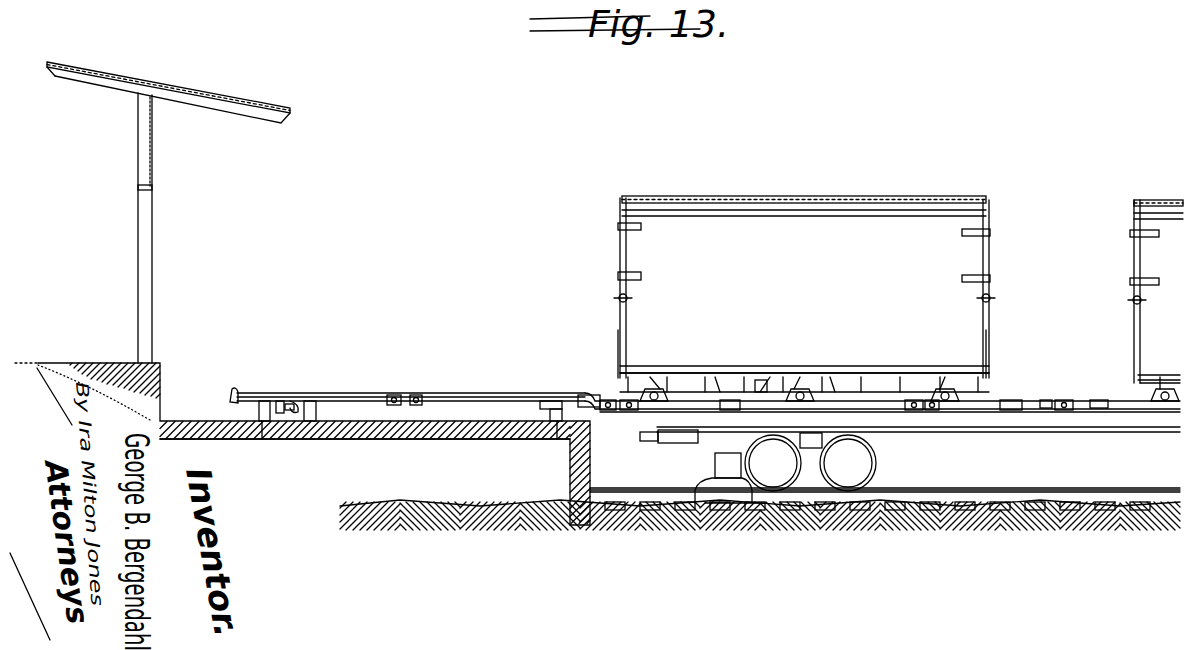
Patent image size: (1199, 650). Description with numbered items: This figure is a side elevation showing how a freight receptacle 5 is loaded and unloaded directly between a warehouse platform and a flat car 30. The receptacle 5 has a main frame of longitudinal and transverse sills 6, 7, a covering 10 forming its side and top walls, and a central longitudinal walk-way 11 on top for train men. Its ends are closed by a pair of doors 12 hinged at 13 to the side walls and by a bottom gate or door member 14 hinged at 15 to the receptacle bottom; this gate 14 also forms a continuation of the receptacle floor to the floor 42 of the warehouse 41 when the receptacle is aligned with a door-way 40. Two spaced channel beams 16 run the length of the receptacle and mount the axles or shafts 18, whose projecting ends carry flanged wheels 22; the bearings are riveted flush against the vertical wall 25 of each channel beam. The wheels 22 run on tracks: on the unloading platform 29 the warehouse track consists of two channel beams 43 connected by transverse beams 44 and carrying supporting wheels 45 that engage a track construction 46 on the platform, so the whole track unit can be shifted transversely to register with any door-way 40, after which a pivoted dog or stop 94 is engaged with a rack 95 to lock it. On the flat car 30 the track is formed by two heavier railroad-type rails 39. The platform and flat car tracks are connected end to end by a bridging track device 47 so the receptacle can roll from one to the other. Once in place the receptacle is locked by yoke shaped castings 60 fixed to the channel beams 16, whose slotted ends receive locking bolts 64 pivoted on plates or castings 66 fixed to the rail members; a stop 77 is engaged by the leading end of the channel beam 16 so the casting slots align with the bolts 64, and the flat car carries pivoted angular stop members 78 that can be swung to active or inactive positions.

The receptacle 5 is at (918, 195).
The longitudinal sill 6 is at (1160, 383).
The transverse sill 7 is at (780, 380).
The covering 10 is at (865, 312).
The central longitudinal walk-way 11 is at (772, 196).
The doors 12 is at (618, 244).
The door hinge 13 is at (641, 276).
The bottom gate or door member 14 is at (612, 302).
The gate hinge 15 is at (618, 378).
The channel beams 16 is at (832, 377).
The axles or shafts 18 is at (655, 389).
The flanged wheels 22 is at (655, 389).
The vertical wall 25 is at (690, 380).
The unloading platform 29 is at (410, 440).
The flat car 30 is at (975, 438).
The rails 39 is at (1022, 433).
The door-way 40 is at (138, 240).
The warehouse 41 is at (190, 88).
The warehouse floor 42 is at (62, 363).
The channel beams of warehouse track 43 is at (352, 393).
The transverse beams 44 is at (310, 421).
The supporting wheels 45 is at (284, 401).
The track construction on warehouse platform 46 is at (262, 439).
The bridging track device 47 is at (640, 436).
The yoke shaped castings 60 is at (598, 390).
The locking bolts 64 is at (430, 395).
The plates or castings 66 is at (400, 395).
The stop 77 is at (230, 395).
The angular stop members 78 is at (758, 380).
The pivoted dog or stop 94 is at (300, 400).
The rack 95 is at (310, 421).